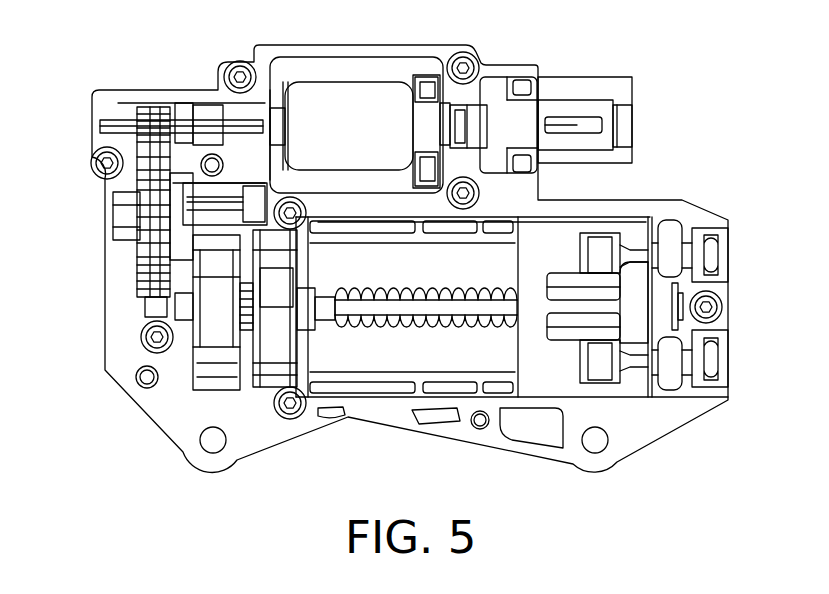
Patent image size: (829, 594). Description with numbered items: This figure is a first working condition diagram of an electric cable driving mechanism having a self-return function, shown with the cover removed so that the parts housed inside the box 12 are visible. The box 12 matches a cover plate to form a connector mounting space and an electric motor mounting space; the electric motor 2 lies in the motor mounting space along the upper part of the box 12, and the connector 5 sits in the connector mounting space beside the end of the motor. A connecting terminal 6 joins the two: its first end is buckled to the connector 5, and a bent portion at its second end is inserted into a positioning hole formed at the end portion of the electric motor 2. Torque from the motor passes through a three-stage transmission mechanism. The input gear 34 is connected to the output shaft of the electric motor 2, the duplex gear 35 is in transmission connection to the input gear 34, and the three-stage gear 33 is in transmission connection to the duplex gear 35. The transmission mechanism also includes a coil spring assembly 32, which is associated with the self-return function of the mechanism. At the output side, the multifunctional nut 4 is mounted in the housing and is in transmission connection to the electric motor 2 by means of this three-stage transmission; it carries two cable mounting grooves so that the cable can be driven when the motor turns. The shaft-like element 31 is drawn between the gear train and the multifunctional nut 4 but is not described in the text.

The electric motor 2 is at (347, 113).
The multifunctional nut 4 is at (565, 367).
The connector 5 is at (560, 105).
The connecting terminal 6 is at (468, 84).
The box 12 is at (638, 197).
The worm shaft 31 is at (398, 318).
The coil spring assembly 32 is at (265, 323).
The three-stage gear 33 is at (212, 305).
The input gear 34 is at (152, 110).
The duplex gear 35 is at (130, 183).